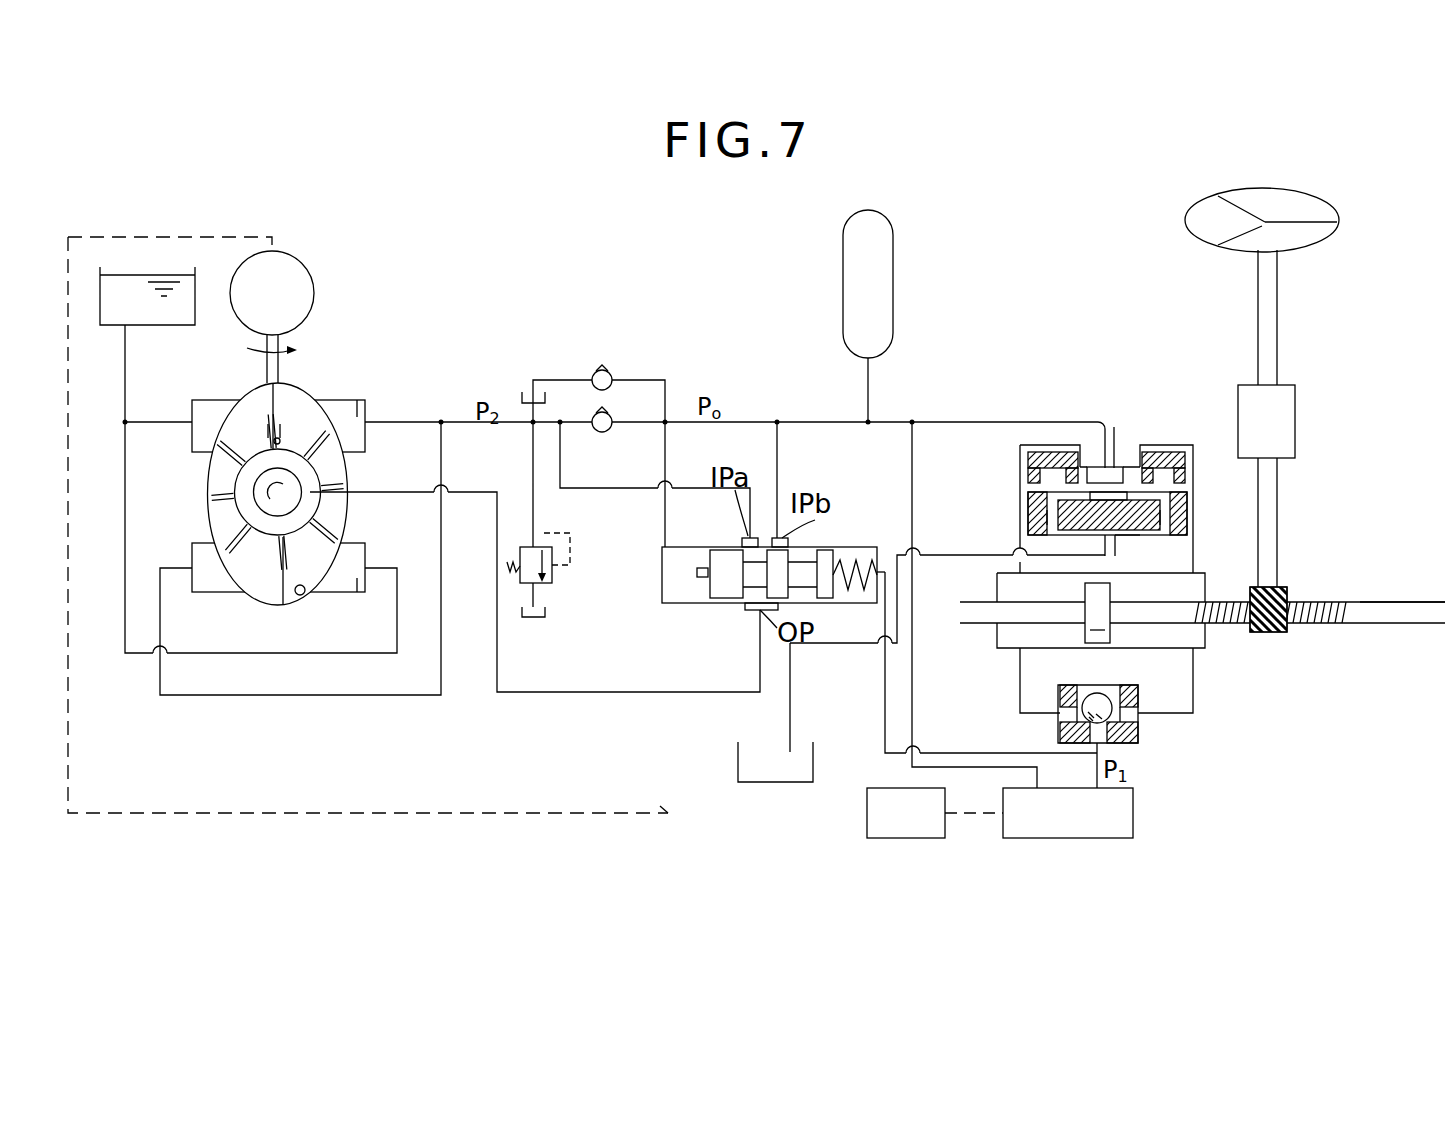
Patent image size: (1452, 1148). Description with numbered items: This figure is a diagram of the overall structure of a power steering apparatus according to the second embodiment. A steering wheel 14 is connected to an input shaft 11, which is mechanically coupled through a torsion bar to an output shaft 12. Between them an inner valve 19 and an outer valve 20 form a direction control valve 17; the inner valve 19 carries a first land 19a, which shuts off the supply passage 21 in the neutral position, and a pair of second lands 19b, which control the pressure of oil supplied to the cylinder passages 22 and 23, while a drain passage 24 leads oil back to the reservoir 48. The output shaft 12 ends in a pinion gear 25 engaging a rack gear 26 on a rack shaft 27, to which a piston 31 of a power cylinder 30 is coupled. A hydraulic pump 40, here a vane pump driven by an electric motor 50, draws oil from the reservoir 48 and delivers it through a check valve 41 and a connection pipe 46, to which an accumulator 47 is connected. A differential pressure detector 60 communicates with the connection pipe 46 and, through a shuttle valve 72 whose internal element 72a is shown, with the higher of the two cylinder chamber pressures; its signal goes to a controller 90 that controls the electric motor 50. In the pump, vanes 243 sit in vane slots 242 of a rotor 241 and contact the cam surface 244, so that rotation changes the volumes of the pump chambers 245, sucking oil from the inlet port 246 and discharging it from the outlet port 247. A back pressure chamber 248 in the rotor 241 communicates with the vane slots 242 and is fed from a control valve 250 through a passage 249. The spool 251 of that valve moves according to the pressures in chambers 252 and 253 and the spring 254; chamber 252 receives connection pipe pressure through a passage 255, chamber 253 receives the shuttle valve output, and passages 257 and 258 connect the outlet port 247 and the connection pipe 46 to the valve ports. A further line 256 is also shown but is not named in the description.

The steering wheel 14 is at (1325, 202).
The input shaft 11 is at (1280, 347).
The output shaft 12 is at (1272, 498).
The direction control valve 17 is at (1013, 469).
The inner valve 19 is at (1078, 518).
The first land 19a is at (1150, 525).
The second lands 19b is at (1035, 506).
The outer valve 20 is at (1170, 447).
The supply passage 21 is at (1121, 458).
The cylinder passage 22 is at (1067, 458).
The cylinder passage 23 is at (1153, 472).
The drain passage 24 is at (1108, 539).
The pinion gear 25 is at (1272, 633).
The rack gear 26 is at (1333, 601).
The rack shaft 27 is at (1397, 602).
The power cylinder 30 is at (1005, 657).
The piston 31 is at (1100, 614).
The hydraulic pump 40 is at (330, 370).
The check valve 41 is at (602, 433).
The connection pipe 46 is at (933, 420).
The accumulator 47 is at (878, 238).
The reservoir 48 is at (192, 288).
The electric motor 50 is at (292, 270).
The differential pressure detector 60 is at (1073, 839).
The shuttle valve 72 is at (1150, 730).
The ball 72a is at (1095, 695).
The controller 90 is at (908, 839).
The rotor 241 is at (222, 494).
The vane slots 242 is at (312, 398).
The vanes 243 is at (280, 437).
The cam surface 244 is at (303, 594).
The pump chambers 245 is at (245, 402).
The inlet port 246 is at (207, 407).
The outlet port 247 is at (358, 417).
The back pressure chamber 248 is at (270, 523).
The passage 249 is at (680, 694).
The control valve 250 is at (650, 602).
The spool 251 is at (722, 592).
The chamber 252 is at (684, 562).
The chamber 253 is at (852, 547).
The spring 254 is at (848, 592).
The passage 255 is at (668, 452).
The drain passage 256 is at (884, 686).
The passage 257 is at (613, 490).
The passage 258 is at (782, 458).